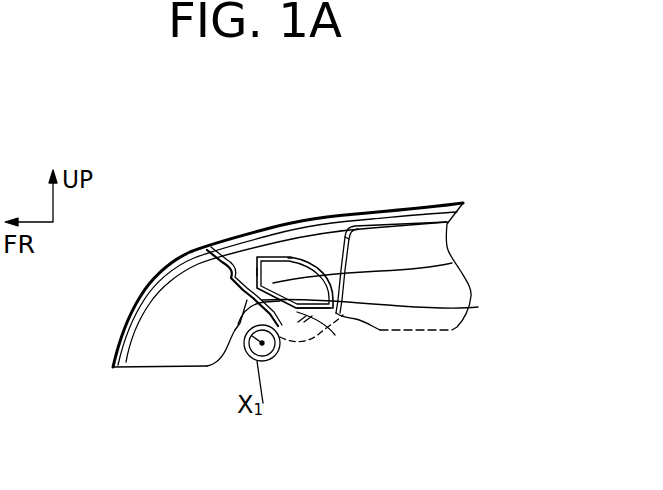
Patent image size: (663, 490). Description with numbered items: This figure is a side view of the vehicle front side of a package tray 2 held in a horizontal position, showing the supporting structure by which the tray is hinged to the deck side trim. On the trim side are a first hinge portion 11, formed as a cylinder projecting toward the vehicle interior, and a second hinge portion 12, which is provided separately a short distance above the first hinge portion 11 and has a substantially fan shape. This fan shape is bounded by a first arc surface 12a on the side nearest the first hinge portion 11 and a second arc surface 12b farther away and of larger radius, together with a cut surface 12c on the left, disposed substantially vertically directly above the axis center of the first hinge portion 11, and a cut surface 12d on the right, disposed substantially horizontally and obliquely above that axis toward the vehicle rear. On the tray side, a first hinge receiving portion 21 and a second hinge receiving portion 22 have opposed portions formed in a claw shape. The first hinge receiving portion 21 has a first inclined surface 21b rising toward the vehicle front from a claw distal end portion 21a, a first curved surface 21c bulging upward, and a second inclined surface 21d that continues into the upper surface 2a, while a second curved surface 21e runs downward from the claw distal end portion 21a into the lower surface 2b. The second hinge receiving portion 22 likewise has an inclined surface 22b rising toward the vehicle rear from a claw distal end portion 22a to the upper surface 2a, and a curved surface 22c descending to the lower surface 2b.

The package tray 2 is at (422, 203).
The upper surface 2a is at (178, 261).
The lower surface 2b is at (148, 367).
The first hinge portion 11 is at (270, 361).
The second hinge portion 12 is at (259, 257).
The first arc surface 12a is at (308, 320).
The second arc surface 12b is at (291, 257).
The cut surface 12c is at (256, 270).
The cut surface 12d is at (328, 312).
The first hinge receiving portion 21 is at (232, 298).
The claw distal end portion 21a is at (303, 318).
The first inclined surface 21b is at (478, 307).
The first curved surface 21c is at (452, 263).
The second inclined surface 21d is at (225, 252).
The second curved surface 21e is at (237, 347).
The second hinge receiving portion 22 is at (362, 257).
The claw distal end portion 22a is at (340, 320).
The inclined surface 22b is at (340, 228).
The curved surface 22c is at (357, 320).